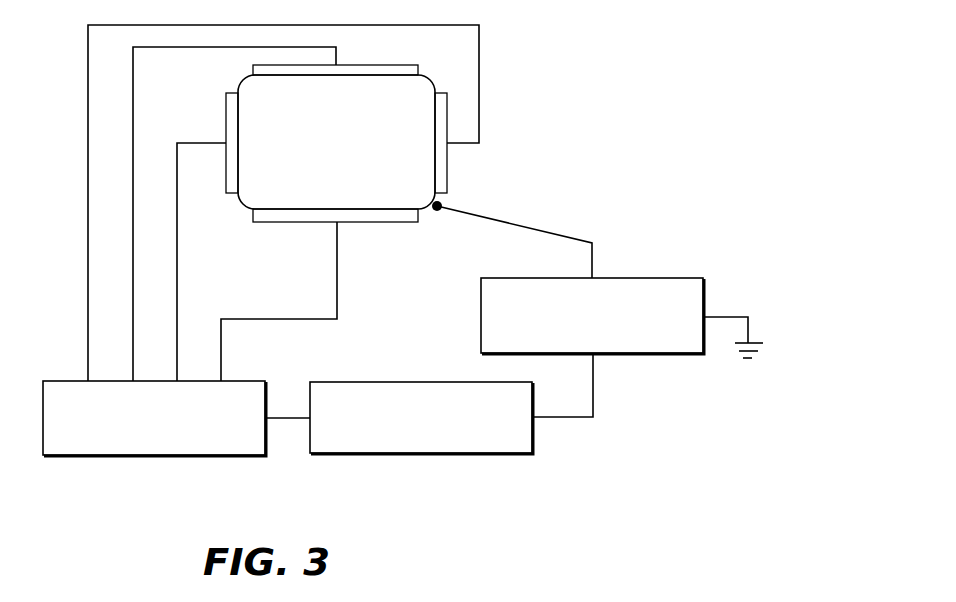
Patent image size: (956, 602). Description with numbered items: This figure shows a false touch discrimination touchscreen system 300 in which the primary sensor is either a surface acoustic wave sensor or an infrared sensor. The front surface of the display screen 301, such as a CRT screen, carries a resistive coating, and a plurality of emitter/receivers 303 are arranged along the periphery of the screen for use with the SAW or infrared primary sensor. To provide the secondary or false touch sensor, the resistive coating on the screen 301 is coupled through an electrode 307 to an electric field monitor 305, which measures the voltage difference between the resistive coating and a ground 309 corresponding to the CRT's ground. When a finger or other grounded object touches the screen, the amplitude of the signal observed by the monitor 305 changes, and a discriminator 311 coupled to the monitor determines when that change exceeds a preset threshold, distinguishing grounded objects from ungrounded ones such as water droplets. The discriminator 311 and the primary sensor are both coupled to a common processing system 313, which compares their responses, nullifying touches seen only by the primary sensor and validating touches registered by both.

The touchscreen system 300 is at (653, 122).
The display screen 301 is at (351, 158).
The emitter/receivers 303 is at (380, 70).
The electric field monitor 305 is at (538, 278).
The electrode 307 is at (440, 204).
The ground 309 is at (757, 353).
The discriminator 311 is at (372, 453).
The processing system 313 is at (143, 455).